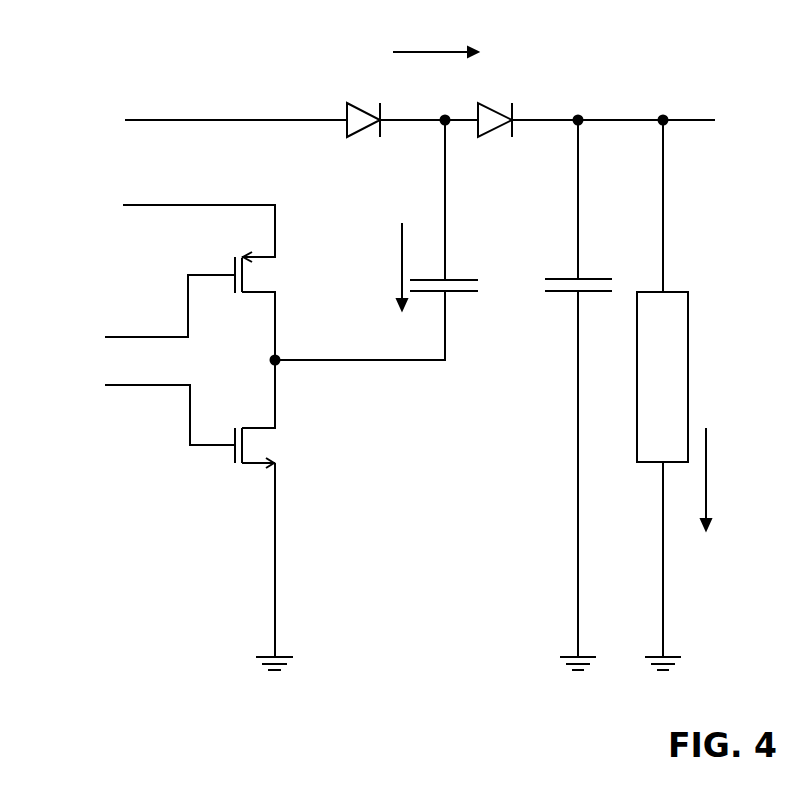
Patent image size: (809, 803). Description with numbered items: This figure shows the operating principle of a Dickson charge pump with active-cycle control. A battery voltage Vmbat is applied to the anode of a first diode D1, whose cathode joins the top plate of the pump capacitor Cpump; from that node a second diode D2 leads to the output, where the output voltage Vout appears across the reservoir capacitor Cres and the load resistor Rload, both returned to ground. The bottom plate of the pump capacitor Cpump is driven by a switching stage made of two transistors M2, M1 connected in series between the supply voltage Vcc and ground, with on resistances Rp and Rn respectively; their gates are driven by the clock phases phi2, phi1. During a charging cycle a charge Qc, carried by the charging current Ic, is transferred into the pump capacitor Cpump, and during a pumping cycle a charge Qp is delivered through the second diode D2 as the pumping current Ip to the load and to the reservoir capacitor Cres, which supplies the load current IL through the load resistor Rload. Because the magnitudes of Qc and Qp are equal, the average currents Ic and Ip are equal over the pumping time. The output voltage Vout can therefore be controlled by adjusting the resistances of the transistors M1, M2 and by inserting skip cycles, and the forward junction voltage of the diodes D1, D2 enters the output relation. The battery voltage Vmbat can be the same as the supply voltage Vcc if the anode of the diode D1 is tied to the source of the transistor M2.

The battery voltage Vmbat is at (219, 126).
The supply voltage Vcc is at (183, 227).
The output voltage Vout is at (741, 122).
The diode D1 is at (412, 105).
The diode D2 is at (596, 105).
The transistor M1 is at (270, 508).
The transistor M2 is at (270, 306).
The clock phase 1 input phi1 is at (170, 415).
The clock phase 2 input phi2 is at (170, 306).
The pump capacitor Cpump is at (376, 240).
The reservoir capacitor Cres is at (584, 395).
The load resistor Rload is at (691, 395).
The pumping current Ip is at (435, 41).
The charging current Ic is at (390, 266).
The load current IL is at (717, 479).